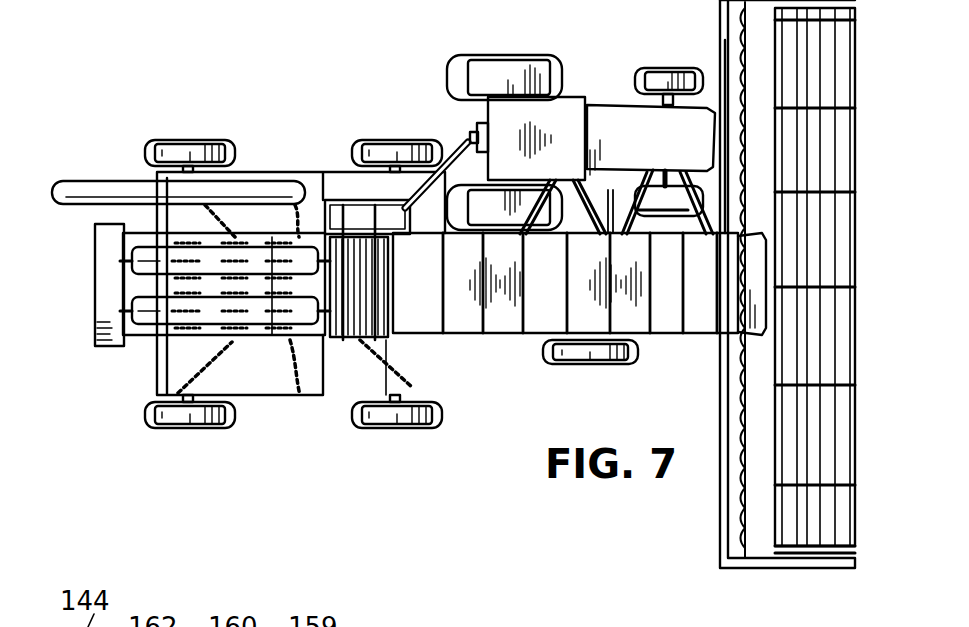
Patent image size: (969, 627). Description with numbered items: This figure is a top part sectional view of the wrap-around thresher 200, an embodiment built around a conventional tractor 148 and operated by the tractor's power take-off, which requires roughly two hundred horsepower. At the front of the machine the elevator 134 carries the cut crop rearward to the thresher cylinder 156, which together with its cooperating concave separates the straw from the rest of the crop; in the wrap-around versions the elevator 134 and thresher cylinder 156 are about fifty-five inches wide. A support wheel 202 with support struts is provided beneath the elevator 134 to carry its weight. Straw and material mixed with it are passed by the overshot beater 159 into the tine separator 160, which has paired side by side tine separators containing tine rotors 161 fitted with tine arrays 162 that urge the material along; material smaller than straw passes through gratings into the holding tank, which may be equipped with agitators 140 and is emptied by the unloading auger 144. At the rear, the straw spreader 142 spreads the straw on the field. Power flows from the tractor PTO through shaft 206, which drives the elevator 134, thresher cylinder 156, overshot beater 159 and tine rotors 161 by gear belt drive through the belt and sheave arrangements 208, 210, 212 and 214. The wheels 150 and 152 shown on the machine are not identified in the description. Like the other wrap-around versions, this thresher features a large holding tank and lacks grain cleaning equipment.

The elevator 134 is at (663, 320).
The agitators 140 is at (238, 215).
The straw spreader 142 is at (95, 228).
The unloading auger 144 is at (68, 186).
The tractor 148 is at (563, 118).
The wheel 150 is at (393, 142).
The wheel 152 is at (166, 148).
The thresher cylinder 156 is at (433, 340).
The overshot beater 159 is at (386, 372).
The tine separator 160 is at (167, 268).
The tine rotors 161 is at (167, 318).
The tine arrays 162 is at (272, 336).
The wrap-around thresher 200 is at (243, 100).
The support wheel 202 is at (578, 352).
The shaft 206 is at (446, 158).
The belt and sheave arrangement 208 is at (418, 212).
The belt and sheave arrangement 210 is at (370, 228).
The belt and sheave arrangement 212 is at (343, 205).
The belt and sheave arrangement 214 is at (318, 205).